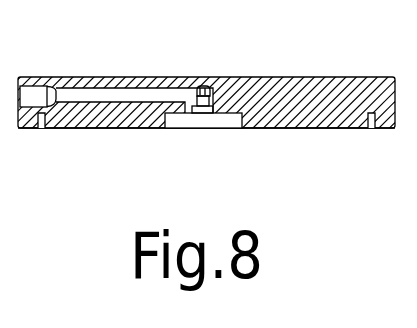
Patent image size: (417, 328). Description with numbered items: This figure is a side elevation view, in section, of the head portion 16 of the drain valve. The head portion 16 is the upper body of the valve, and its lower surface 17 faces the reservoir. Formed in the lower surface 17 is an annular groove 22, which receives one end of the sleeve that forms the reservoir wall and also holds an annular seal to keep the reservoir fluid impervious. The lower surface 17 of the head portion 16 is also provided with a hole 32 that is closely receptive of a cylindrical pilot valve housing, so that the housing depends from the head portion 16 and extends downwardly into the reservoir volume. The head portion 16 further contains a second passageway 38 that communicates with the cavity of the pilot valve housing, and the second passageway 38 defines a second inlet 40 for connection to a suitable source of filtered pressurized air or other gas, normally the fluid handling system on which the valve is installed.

The head portion 16 is at (123, 84).
The lower surface 17 is at (78, 129).
The annular groove 22 is at (43, 129).
The hole 32 is at (178, 121).
The second passageway 38 is at (165, 98).
The second inlet 40 is at (24, 96).